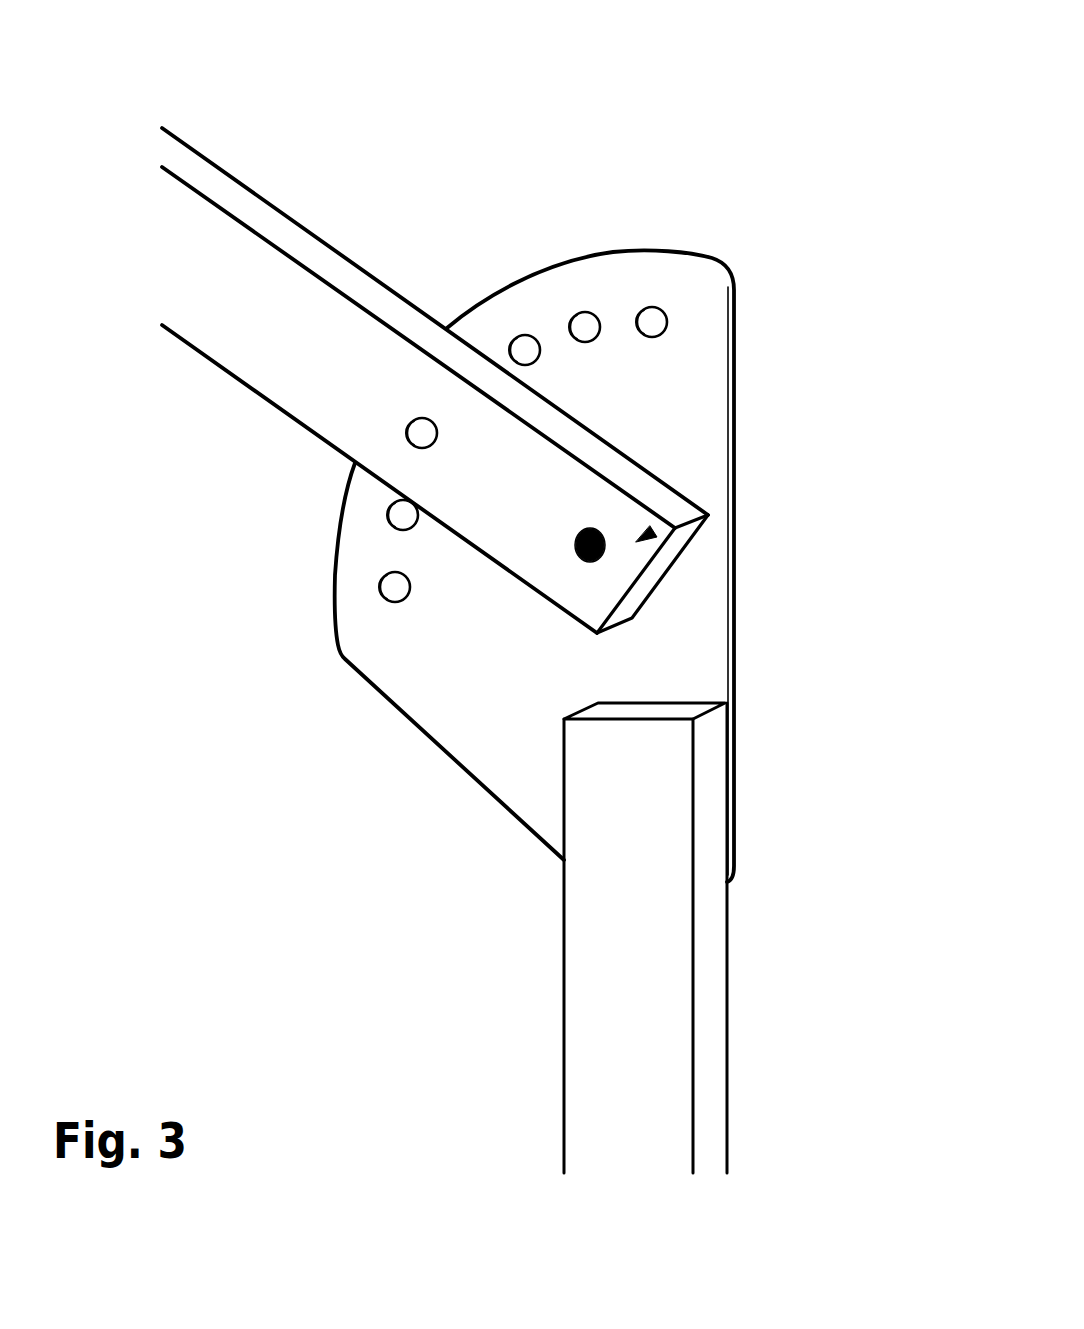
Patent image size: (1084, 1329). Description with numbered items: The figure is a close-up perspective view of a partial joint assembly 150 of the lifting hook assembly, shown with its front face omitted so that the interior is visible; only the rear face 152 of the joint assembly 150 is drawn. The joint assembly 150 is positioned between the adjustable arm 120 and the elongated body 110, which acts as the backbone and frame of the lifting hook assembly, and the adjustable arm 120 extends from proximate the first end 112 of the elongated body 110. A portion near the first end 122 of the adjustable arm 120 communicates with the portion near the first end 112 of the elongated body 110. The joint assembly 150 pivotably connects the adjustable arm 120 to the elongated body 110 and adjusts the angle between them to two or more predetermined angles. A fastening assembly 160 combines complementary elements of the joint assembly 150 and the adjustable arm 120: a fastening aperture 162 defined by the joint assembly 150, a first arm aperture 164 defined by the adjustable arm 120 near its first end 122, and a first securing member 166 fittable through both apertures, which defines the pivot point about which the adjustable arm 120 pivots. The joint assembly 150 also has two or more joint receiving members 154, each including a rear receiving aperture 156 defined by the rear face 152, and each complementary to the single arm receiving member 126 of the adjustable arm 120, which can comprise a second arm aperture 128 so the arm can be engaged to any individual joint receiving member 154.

The elongated body 110 is at (634, 906).
The first end 112 is at (670, 712).
The adjustable arm 120 is at (503, 380).
The first end 122 is at (655, 567).
The arm receiving member 126 is at (420, 417).
The second arm aperture 128 is at (428, 417).
The joint assembly 150 is at (551, 458).
The rear face 152 is at (475, 697).
The joint receiving members 154 is at (652, 318).
The rear receiving aperture 156 is at (667, 320).
The fastening assembly 160 is at (677, 527).
The fastening aperture 162 is at (593, 533).
The first arm aperture 164 is at (596, 534).
The first securing member 166 is at (645, 538).